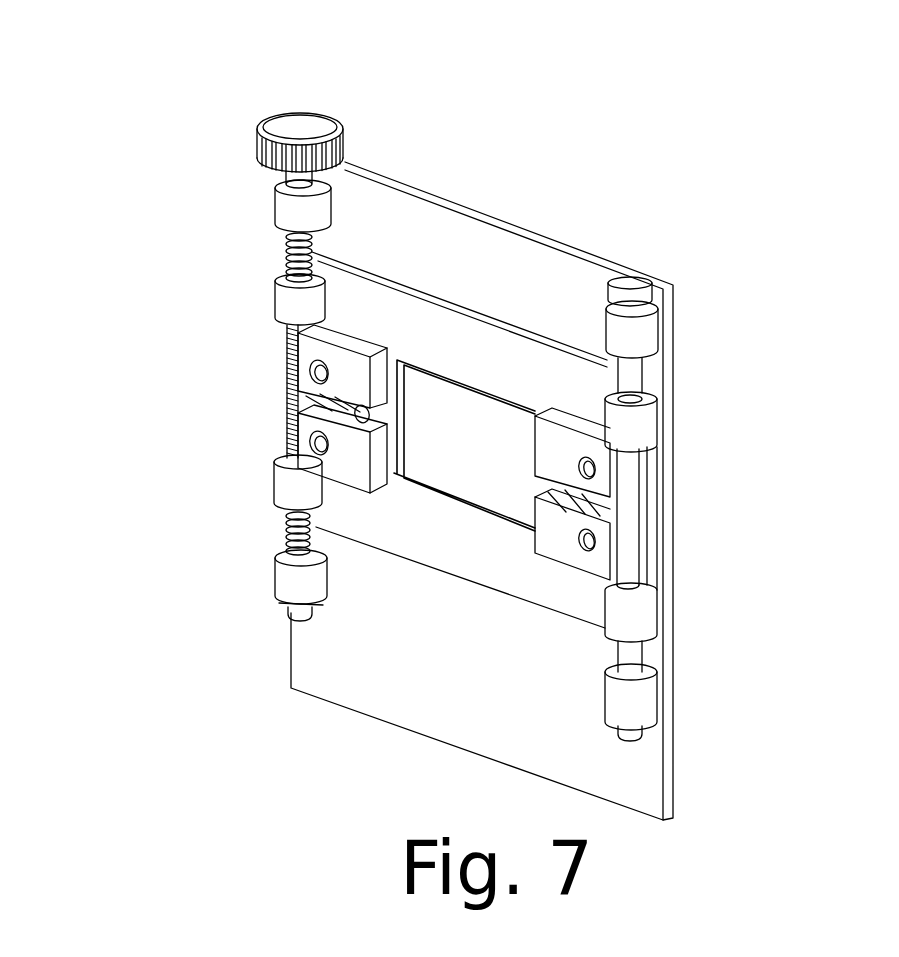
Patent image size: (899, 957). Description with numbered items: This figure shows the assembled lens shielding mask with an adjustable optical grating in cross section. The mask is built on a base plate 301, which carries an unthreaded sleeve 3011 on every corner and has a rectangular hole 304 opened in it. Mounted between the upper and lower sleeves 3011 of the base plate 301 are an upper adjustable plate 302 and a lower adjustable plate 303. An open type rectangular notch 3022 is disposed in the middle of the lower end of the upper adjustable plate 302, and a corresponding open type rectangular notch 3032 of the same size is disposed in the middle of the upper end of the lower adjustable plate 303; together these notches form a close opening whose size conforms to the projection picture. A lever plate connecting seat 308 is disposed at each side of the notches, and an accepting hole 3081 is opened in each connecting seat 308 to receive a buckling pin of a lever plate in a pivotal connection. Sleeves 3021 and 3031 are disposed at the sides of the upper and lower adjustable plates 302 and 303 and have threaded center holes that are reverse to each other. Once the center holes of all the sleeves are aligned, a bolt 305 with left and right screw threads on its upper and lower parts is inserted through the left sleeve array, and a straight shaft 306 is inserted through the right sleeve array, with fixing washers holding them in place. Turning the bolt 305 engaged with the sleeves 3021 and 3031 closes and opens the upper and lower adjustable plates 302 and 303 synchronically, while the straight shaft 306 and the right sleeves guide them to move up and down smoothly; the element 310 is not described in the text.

The base plate 301 is at (625, 773).
The upper adjustable plate 302 is at (465, 342).
The lower adjustable plate 303 is at (440, 543).
The rectangular hole 304 is at (507, 457).
The bolt 305 is at (290, 252).
The straight shaft 306 is at (633, 558).
The lever plate connecting seat 308 is at (565, 537).
The lock nut 310 is at (282, 608).
The sleeve 3011 is at (657, 330).
The sleeve 3021 is at (288, 277).
The open type rectangular notch 3022 is at (440, 390).
The sleeve 3031 is at (285, 462).
The open type rectangular notch 3032 is at (433, 477).
The accepting hole 3081 is at (600, 507).